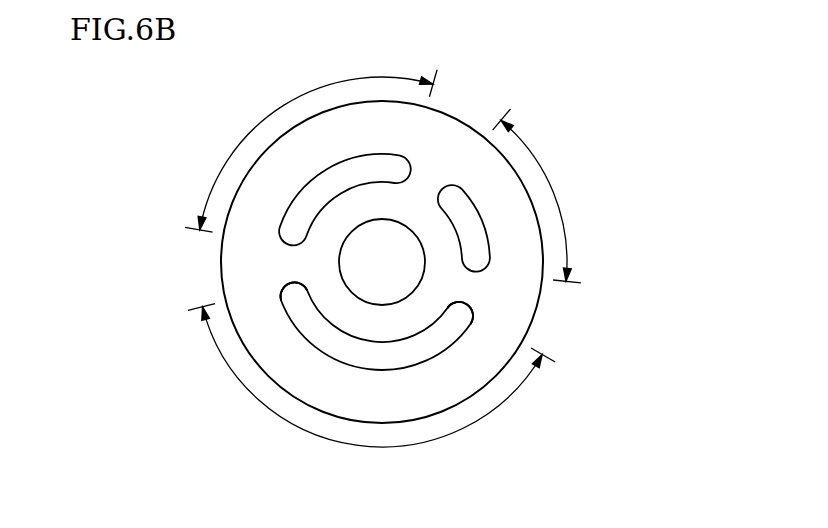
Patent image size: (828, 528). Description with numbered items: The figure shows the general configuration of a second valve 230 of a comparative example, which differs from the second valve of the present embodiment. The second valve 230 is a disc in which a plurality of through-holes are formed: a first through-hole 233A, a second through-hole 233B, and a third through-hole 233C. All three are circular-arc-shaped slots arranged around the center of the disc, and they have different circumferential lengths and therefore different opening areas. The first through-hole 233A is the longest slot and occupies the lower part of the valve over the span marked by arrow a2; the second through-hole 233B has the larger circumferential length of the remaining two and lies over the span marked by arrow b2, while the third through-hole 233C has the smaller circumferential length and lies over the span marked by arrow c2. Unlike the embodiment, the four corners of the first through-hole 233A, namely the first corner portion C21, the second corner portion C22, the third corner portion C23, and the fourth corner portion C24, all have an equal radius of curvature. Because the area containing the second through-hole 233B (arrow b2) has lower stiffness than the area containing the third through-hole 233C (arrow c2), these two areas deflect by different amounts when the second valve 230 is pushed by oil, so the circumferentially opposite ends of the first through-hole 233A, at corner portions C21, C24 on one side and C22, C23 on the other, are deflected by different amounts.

The second valve 230 is at (512, 166).
The first through-hole 233A is at (403, 358).
The second through-hole 233B is at (317, 193).
The third through-hole 233C is at (475, 245).
The first corner portion C21 is at (291, 317).
The second corner portion C22 is at (462, 330).
The third corner portion C23 is at (467, 312).
The fourth corner portion C24 is at (293, 283).
The arrow a2 is at (371, 390).
The arrow b2 is at (311, 151).
The arrow c2 is at (539, 196).